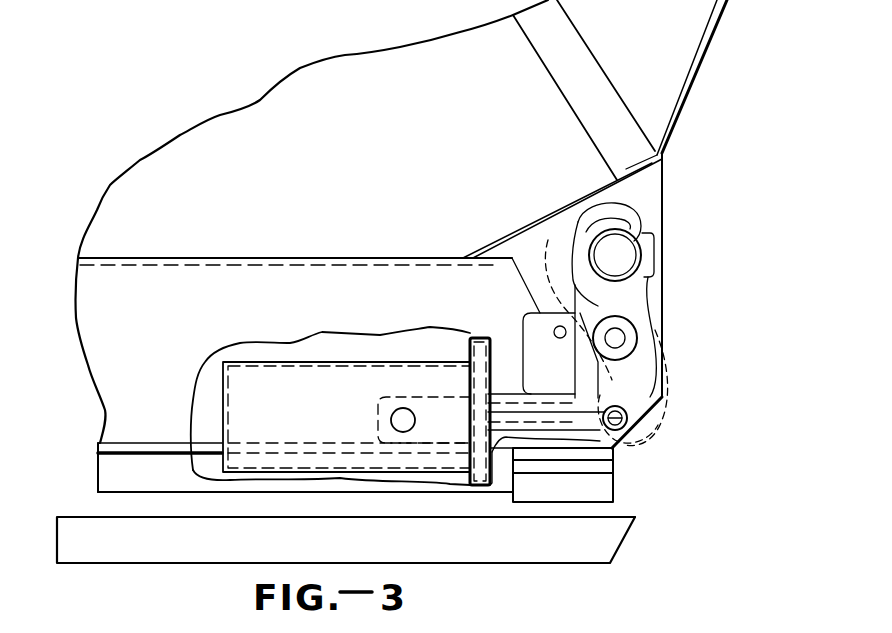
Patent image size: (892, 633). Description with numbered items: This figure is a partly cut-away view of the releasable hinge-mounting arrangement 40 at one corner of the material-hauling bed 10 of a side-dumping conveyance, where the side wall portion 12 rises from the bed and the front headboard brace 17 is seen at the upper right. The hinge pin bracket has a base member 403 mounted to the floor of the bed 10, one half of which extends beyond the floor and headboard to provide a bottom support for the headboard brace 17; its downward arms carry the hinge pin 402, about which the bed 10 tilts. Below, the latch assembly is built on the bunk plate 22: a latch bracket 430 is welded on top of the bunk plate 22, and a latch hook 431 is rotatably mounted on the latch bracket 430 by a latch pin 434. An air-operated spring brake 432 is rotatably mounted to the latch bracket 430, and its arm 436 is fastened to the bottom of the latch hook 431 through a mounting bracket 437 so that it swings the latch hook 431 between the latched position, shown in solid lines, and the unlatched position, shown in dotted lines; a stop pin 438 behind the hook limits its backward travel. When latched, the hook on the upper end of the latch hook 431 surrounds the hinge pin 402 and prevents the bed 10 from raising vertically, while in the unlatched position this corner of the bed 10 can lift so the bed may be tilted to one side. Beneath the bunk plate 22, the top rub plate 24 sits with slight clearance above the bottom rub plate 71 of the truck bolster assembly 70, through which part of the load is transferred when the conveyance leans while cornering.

The material-hauling bed 10 is at (356, 149).
The side wall portion 12 is at (705, 58).
The front headboard brace 17 is at (593, 77).
The bunk plate 22 is at (172, 452).
The top rub plate 24 is at (614, 470).
The releasable hinge-mounting arrangement 40 is at (664, 290).
The truck bolster assembly 70 is at (628, 539).
The bottom rub plate 71 is at (612, 516).
The hinge pin 402 is at (630, 257).
The base member 403 is at (545, 216).
The latch bracket 430 is at (582, 383).
The latch hook 431 is at (618, 224).
The air-operated spring brake 432 is at (308, 411).
The latch pin 434 is at (620, 338).
The arm 436 is at (614, 453).
The mounting bracket 437 is at (634, 430).
The stop pin 438 is at (556, 328).